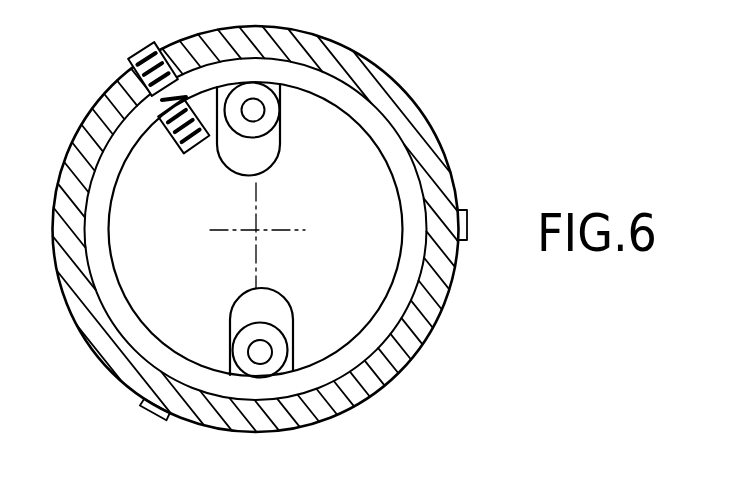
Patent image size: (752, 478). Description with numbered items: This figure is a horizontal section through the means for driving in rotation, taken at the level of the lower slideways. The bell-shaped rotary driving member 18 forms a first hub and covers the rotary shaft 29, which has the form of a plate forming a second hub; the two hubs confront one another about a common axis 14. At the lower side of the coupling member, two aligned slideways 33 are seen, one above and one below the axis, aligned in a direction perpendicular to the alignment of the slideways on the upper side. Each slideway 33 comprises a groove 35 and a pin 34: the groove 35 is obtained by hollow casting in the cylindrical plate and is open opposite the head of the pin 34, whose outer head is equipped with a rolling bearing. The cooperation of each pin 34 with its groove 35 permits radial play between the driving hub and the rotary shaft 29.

The central axis 14 is at (256, 230).
The rotary driving member 18 is at (427, 160).
The rotary shaft 29 is at (365, 270).
The slideway 33 is at (254, 151).
The pin 34 is at (253, 110).
The groove 35 is at (218, 158).